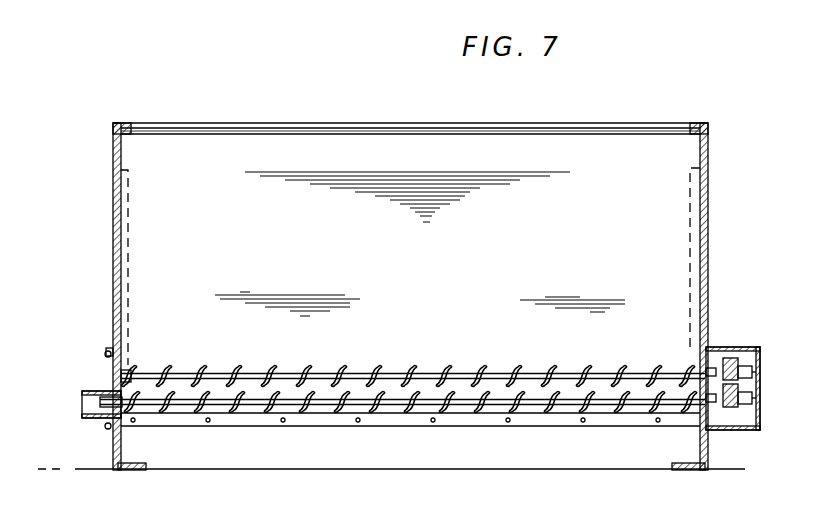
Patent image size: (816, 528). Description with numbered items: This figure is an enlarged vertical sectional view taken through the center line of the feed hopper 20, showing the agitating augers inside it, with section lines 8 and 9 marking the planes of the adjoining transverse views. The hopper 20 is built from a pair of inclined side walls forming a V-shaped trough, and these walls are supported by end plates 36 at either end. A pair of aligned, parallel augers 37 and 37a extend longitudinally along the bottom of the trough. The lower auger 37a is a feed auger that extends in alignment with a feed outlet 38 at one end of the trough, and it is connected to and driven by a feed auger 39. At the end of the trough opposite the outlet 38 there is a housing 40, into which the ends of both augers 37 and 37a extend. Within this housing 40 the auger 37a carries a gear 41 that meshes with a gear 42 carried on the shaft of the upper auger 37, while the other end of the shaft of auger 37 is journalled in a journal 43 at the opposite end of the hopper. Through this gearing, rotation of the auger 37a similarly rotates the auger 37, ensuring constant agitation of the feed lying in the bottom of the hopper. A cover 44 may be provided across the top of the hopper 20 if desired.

The section line 8- 8 is at (235, 97).
The section line 9- 9 is at (723, 338).
The hopper 20 is at (538, 148).
The end plates 36 is at (115, 463).
The auger 37 is at (385, 368).
The feed auger 37a is at (412, 410).
The feed outlet 38 is at (95, 416).
The feed auger 39 is at (82, 401).
The housing 40 is at (733, 380).
The gear 41 is at (726, 402).
The gear 42 is at (722, 362).
The journal 43 is at (126, 372).
The cover 44 is at (402, 132).